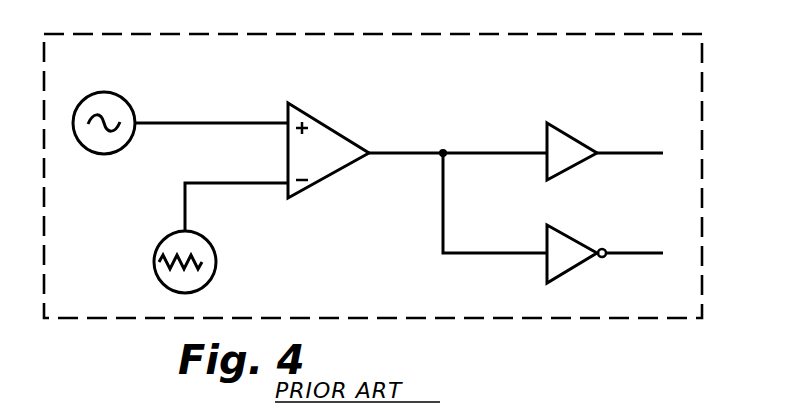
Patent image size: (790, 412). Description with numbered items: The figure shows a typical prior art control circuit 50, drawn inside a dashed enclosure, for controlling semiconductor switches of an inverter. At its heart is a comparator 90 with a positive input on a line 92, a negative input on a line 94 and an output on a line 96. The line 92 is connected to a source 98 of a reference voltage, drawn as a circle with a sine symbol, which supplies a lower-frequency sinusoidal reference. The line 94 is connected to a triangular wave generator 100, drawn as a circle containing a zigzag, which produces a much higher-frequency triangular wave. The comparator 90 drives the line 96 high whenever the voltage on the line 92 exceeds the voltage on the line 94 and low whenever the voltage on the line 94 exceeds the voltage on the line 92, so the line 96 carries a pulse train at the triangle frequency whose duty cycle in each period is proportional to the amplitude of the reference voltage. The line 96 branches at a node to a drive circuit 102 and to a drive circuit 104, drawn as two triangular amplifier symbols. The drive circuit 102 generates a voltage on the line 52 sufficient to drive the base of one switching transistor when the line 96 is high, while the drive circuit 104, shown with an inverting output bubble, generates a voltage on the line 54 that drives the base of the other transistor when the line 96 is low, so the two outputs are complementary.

The control circuit 50 is at (614, 318).
The line 52 is at (638, 152).
The line 54 is at (630, 254).
The comparator 90 is at (340, 130).
The line 92 is at (220, 123).
The line 94 is at (226, 184).
The line 96 is at (415, 148).
The source of a reference voltage 98 is at (114, 92).
The triangular wave generator 100 is at (217, 266).
The drive circuit 102 is at (573, 137).
The drive circuit 104 is at (572, 235).